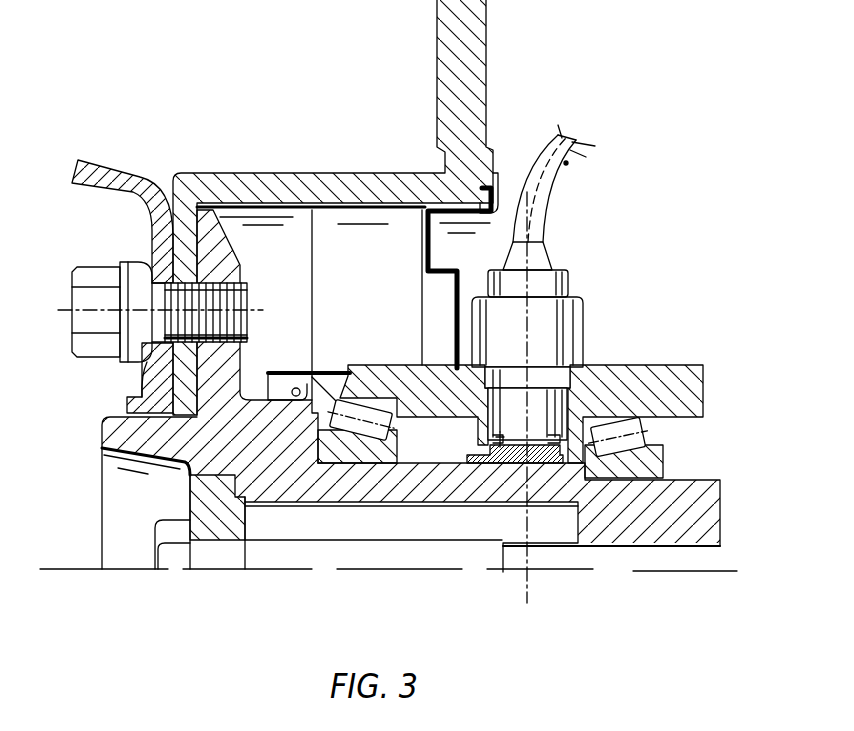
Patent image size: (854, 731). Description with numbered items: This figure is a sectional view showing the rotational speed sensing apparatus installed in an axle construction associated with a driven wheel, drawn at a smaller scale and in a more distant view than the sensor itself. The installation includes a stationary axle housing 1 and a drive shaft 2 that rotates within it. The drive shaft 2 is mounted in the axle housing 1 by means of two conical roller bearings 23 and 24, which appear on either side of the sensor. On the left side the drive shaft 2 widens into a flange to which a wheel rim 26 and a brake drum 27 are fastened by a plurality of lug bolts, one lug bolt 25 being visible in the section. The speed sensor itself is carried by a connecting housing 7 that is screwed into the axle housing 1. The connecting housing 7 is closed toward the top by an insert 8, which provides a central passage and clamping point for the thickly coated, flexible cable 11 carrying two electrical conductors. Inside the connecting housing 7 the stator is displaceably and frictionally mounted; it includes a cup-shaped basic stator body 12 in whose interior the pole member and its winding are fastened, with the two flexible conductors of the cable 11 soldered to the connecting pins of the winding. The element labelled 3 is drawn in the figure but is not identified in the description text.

The axle housing 1 is at (383, 365).
The drive shaft 2 is at (626, 522).
The pulse ring plate 3 is at (468, 452).
The connecting housing 7 is at (566, 321).
The insert 8 is at (536, 258).
The flexible cable 11 is at (541, 205).
The stator body 12 is at (499, 438).
The conical roller bearing 23 is at (658, 428).
The conical roller bearing 24 is at (326, 366).
The lug bolt 25 is at (228, 305).
The wheel rim 26 is at (112, 182).
The brake drum 27 is at (283, 181).